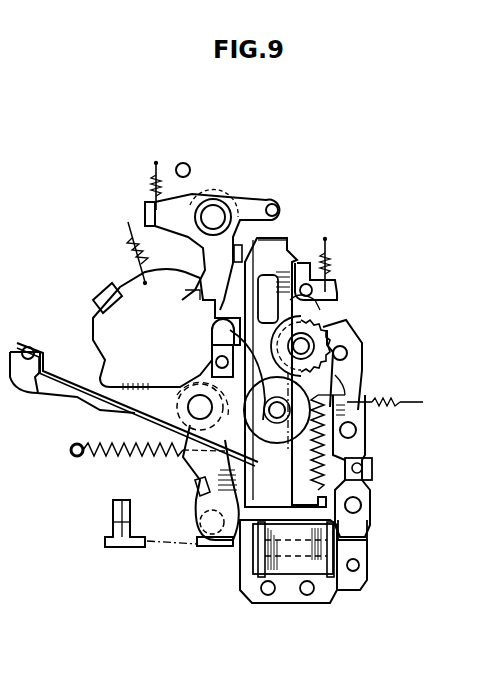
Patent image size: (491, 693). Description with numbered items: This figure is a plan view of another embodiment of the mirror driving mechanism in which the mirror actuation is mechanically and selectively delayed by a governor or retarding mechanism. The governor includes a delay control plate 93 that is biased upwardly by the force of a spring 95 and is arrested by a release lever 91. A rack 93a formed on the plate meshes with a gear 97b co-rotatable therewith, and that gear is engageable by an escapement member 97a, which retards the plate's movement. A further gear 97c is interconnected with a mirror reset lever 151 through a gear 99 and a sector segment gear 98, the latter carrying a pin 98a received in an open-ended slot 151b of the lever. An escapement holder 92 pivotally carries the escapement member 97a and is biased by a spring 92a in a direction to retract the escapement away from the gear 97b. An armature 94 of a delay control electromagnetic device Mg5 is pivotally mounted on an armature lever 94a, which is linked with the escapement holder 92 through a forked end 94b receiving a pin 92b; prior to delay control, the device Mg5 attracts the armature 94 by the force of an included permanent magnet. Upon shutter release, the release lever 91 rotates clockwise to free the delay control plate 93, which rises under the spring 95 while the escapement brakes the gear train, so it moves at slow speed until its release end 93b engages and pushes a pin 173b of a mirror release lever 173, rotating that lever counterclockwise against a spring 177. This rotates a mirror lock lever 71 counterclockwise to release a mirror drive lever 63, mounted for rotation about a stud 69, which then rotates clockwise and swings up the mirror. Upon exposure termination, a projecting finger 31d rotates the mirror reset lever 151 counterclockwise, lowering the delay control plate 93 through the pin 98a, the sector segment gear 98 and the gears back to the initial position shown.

The spring 177 is at (155, 187).
The mirror release lever 173 is at (247, 200).
The pin 173b is at (274, 204).
The delay control plate 93 is at (295, 252).
The release end 93b is at (270, 238).
The rack 93a is at (345, 385).
The release lever 91 is at (318, 292).
The gear 97c is at (330, 304).
The gear 97b is at (323, 326).
The escapement member 97a is at (360, 334).
The gear 99 is at (347, 402).
The escapement holder 92 is at (360, 412).
The spring 92a is at (404, 402).
The pin 92b is at (368, 490).
The spring 95 is at (370, 458).
The forked end 94b is at (375, 460).
The armature lever 94a is at (363, 522).
The armature 94 is at (367, 576).
The delay control electromagnetic device Mg5 is at (285, 597).
The projecting finger 31d is at (130, 547).
The mirror drive lever 63 is at (33, 382).
The stud 69 is at (172, 420).
The mirror reset lever 151 is at (180, 373).
The open-ended slot 151b is at (185, 352).
The mirror lock lever 71 is at (125, 287).
The sector segment gear 98 is at (255, 313).
The pin 98a is at (256, 336).